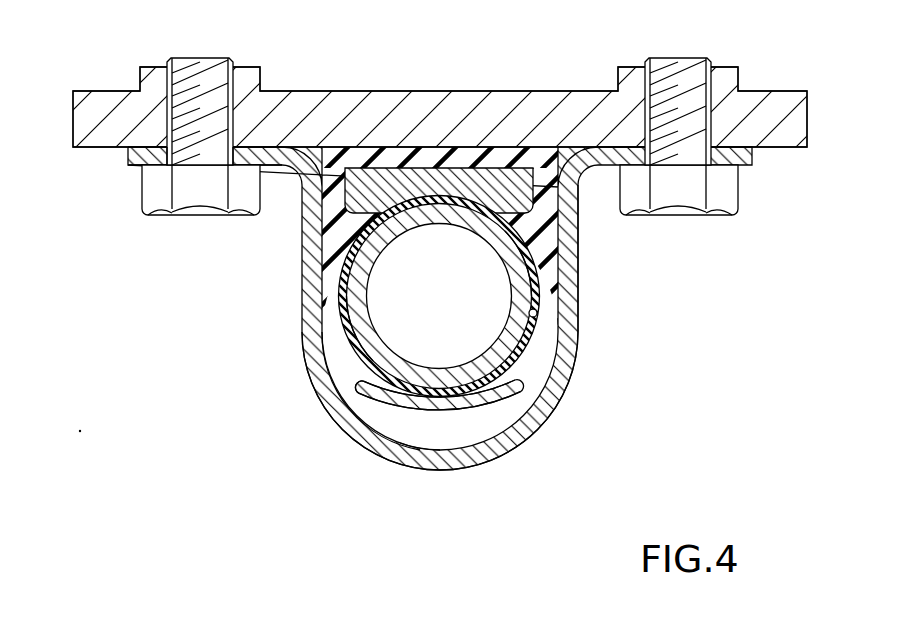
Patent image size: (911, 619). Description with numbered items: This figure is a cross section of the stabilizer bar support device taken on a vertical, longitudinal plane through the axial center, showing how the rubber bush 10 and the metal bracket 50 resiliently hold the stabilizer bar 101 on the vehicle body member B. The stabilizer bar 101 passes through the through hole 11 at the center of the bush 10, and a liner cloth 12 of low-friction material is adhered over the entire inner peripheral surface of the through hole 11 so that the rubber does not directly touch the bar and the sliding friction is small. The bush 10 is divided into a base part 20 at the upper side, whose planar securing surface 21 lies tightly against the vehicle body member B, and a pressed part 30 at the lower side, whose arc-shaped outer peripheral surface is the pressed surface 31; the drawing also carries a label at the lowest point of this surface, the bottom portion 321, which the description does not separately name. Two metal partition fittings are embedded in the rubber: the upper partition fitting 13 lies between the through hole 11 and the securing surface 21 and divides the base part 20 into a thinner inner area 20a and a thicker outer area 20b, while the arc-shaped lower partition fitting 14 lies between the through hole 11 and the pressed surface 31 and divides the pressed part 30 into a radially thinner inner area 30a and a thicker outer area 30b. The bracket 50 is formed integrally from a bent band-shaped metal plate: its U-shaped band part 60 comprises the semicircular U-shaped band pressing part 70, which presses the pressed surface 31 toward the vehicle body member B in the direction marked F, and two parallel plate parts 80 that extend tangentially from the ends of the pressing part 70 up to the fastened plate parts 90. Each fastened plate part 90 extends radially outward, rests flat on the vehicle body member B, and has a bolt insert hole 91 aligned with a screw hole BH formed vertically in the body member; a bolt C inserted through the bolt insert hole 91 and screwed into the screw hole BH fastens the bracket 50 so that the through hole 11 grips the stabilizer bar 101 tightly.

The vehicle body member B is at (73, 116).
The screw hole BH is at (170, 108).
The bolt C is at (142, 197).
The fastened plate part 90 is at (140, 166).
The bolt insert hole 91 is at (171, 167).
The bracket 50 is at (297, 218).
The U-shaped band part 60 is at (580, 357).
The U-shaped band pressing part 70 is at (464, 471).
The pressed surface 31 is at (379, 451).
The inner bottom surface 321 is at (420, 452).
The bush 10 is at (334, 347).
The stabilizer bar 101 is at (338, 318).
The through hole 11 is at (538, 313).
The liner cloth 12 is at (540, 244).
The upper partition fitting 13 is at (370, 168).
The lower partition fitting 14 is at (357, 392).
The base part 20 is at (546, 204).
The inner area 20a is at (468, 186).
The outer area 20b is at (460, 154).
The planar securing surface 21 is at (419, 147).
The pressed part 30 is at (520, 404).
The inner area 30a is at (459, 403).
The outer area 30b is at (470, 433).
The parallel plate part 80 is at (338, 291).
The pressing direction F is at (695, 425).